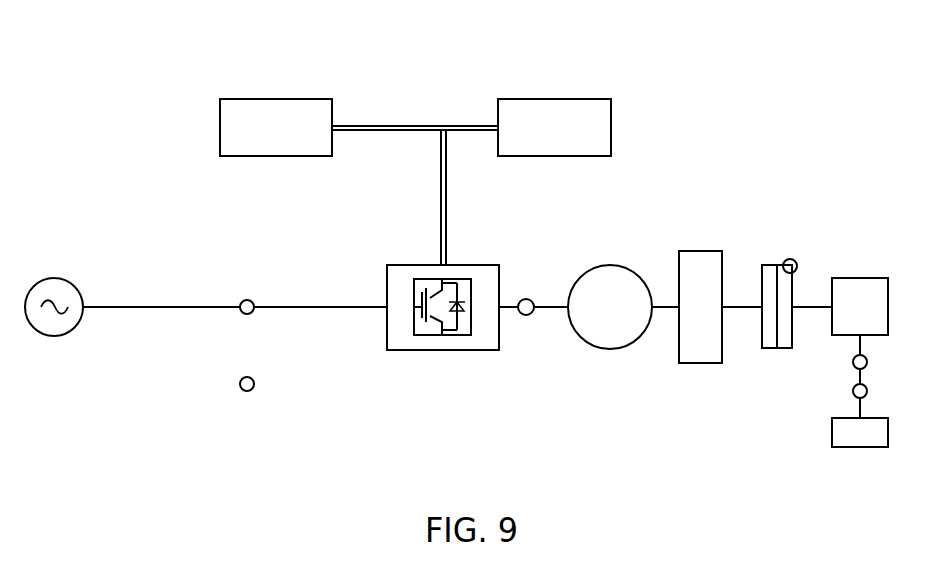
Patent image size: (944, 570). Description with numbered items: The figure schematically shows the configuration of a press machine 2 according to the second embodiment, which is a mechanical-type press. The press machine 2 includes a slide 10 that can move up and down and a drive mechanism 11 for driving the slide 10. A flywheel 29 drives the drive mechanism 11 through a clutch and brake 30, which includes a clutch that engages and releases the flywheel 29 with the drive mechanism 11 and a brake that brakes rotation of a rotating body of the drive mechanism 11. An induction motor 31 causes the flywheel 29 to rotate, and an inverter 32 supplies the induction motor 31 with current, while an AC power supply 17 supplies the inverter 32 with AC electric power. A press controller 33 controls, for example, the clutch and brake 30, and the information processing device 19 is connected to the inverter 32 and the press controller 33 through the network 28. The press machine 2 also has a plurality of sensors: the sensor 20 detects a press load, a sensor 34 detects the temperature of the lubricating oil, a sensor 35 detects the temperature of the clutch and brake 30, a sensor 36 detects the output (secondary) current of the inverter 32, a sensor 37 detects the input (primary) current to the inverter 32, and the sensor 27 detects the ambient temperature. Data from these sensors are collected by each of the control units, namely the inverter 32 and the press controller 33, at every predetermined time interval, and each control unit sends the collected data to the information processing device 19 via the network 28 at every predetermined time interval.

The press machine 2 is at (862, 56).
The slide 10 is at (865, 448).
The drive mechanism 11 is at (865, 277).
The AC power supply 17 is at (55, 336).
The information processing device 19 is at (280, 98).
The sensor 20 is at (852, 393).
The sensor 27 is at (247, 392).
The network 28 is at (392, 125).
The flywheel 29 is at (699, 364).
The clutch and brake 30 is at (770, 264).
The induction motor 31 is at (609, 350).
The inverter 32 is at (444, 351).
The press controller 33 is at (558, 98).
The sensor 34 is at (852, 364).
The sensor 35 is at (793, 259).
The sensor 36 is at (526, 298).
The sensor 37 is at (248, 299).